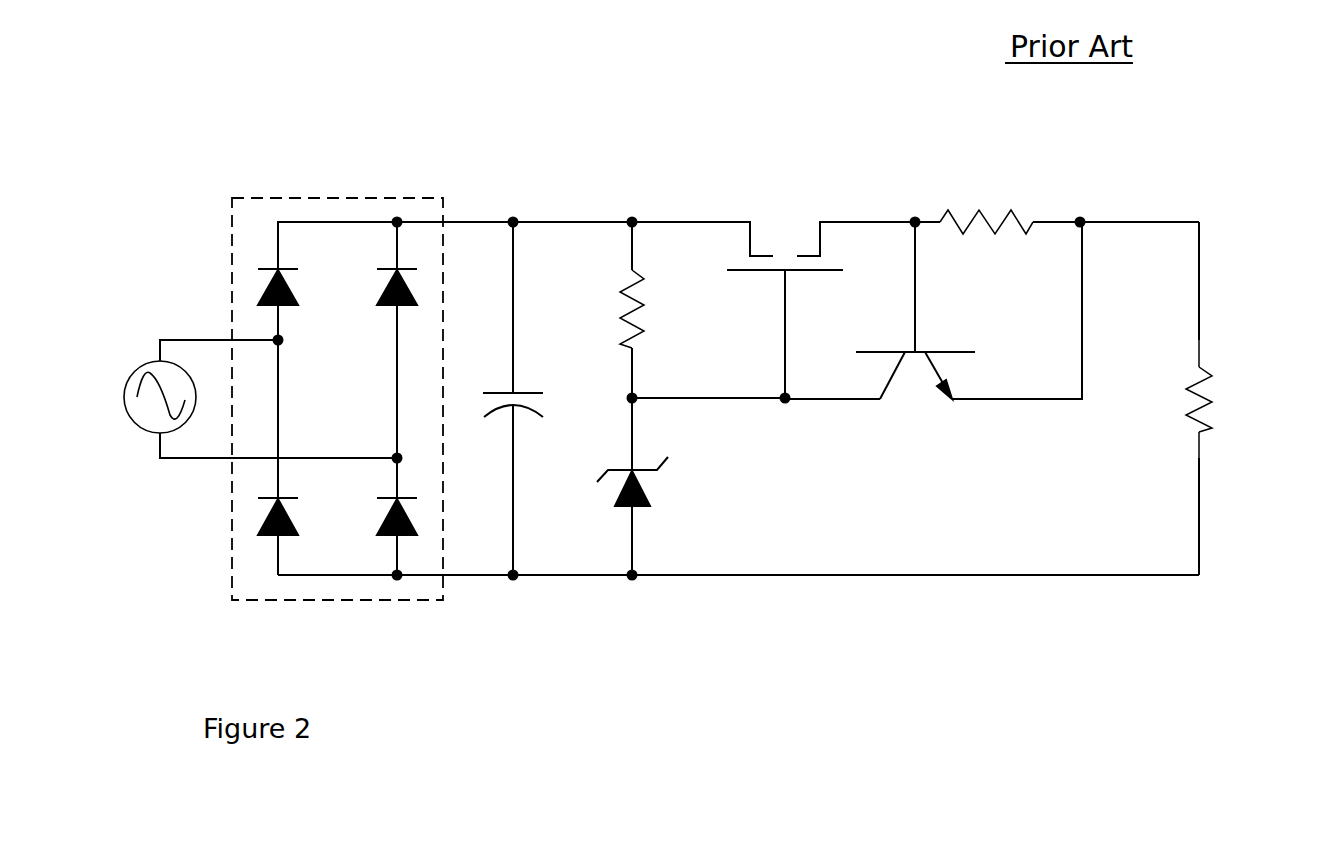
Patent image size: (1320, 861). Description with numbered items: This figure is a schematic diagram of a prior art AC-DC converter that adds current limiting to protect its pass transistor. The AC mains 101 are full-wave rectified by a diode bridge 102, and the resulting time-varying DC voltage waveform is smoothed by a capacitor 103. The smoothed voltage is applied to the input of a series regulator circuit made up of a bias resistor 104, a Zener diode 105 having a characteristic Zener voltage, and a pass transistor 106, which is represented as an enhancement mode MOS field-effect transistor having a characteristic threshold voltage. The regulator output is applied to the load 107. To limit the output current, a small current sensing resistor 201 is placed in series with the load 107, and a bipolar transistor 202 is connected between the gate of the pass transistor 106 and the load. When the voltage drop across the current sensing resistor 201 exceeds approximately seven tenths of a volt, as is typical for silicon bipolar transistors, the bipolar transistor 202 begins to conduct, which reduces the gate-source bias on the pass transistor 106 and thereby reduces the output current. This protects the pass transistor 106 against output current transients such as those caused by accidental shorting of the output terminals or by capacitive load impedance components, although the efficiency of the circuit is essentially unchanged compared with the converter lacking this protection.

The AC mains 101 is at (132, 377).
The diode bridge 102 is at (342, 197).
The capacitor 103 is at (498, 380).
The bias resistor 104 is at (607, 303).
The Zener diode 105 is at (655, 487).
The pass transistor 106 is at (787, 220).
The load 107 is at (1222, 398).
The current sensing resistor 201 is at (1008, 198).
The bipolar transistor 202 is at (915, 399).